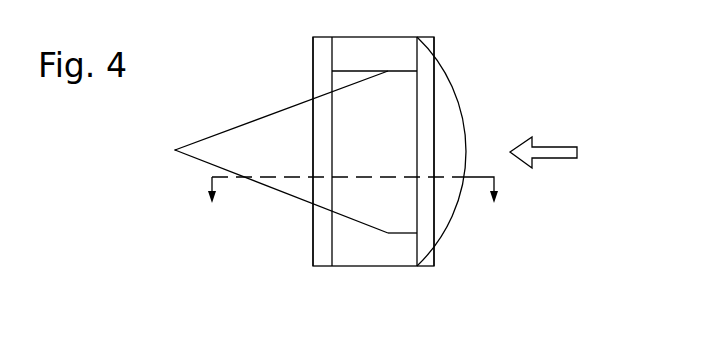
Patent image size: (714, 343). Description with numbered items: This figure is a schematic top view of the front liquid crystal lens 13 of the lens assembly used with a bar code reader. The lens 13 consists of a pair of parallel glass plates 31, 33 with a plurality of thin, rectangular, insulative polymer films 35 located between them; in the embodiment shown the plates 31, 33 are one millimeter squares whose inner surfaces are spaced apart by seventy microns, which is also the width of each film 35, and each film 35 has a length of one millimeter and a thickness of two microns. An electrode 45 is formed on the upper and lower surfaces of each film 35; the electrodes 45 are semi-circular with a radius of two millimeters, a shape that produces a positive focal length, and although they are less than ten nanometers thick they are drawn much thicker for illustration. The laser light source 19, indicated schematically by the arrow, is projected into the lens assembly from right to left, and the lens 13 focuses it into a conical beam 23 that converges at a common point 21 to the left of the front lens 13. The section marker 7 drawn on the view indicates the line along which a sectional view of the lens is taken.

The section line 7- 7 is at (353, 212).
The front liquid crystal lens 13 is at (232, 269).
The laser light source 19 is at (555, 147).
The common point 21 is at (175, 150).
The conical beam 23 is at (237, 127).
The glass plate 31 is at (313, 85).
The glass plate 33 is at (434, 76).
The polymer film 35 is at (357, 276).
The electrode 45 is at (400, 52).